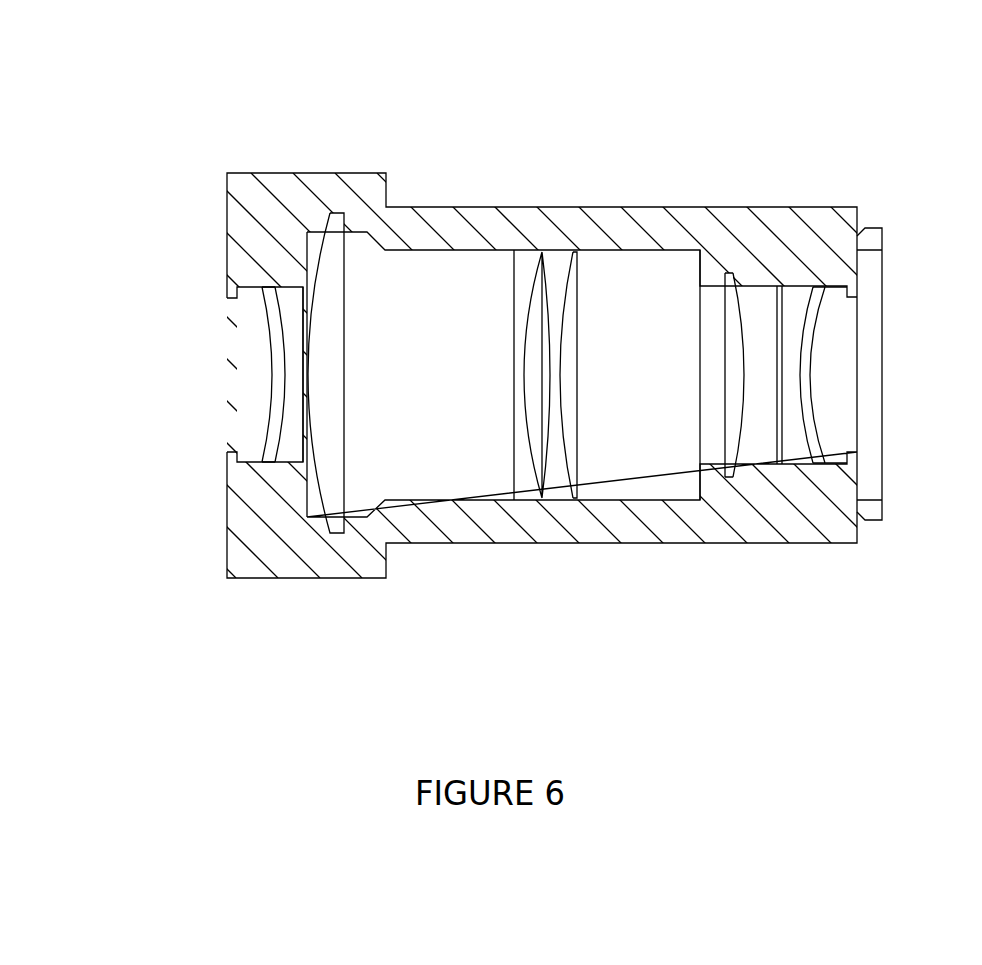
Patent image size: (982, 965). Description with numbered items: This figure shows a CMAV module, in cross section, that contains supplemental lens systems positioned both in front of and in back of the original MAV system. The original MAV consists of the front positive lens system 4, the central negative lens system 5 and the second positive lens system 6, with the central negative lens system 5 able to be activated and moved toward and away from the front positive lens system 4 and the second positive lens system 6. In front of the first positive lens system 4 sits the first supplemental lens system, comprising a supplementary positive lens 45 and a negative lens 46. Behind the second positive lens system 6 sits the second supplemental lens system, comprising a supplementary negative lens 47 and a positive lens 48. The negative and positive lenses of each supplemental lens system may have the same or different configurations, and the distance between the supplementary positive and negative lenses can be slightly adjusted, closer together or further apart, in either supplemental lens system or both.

The front positive lens system 4 is at (331, 415).
The central negative lens system 5 is at (588, 560).
The second positive lens system 6 is at (736, 383).
The supplementary positive lens 45 is at (253, 377).
The negative lens 46 is at (295, 373).
The supplementary negative lens 47 is at (790, 373).
The positive lens 48 is at (833, 373).